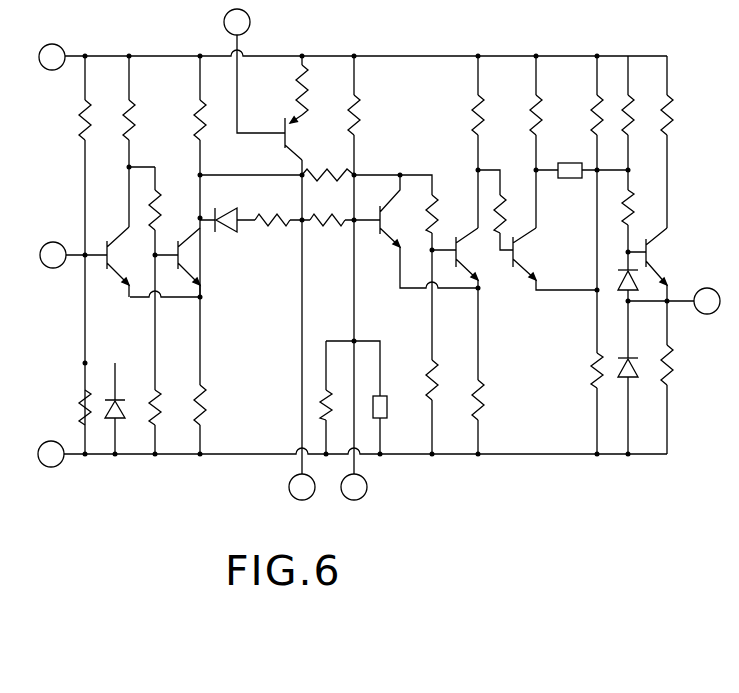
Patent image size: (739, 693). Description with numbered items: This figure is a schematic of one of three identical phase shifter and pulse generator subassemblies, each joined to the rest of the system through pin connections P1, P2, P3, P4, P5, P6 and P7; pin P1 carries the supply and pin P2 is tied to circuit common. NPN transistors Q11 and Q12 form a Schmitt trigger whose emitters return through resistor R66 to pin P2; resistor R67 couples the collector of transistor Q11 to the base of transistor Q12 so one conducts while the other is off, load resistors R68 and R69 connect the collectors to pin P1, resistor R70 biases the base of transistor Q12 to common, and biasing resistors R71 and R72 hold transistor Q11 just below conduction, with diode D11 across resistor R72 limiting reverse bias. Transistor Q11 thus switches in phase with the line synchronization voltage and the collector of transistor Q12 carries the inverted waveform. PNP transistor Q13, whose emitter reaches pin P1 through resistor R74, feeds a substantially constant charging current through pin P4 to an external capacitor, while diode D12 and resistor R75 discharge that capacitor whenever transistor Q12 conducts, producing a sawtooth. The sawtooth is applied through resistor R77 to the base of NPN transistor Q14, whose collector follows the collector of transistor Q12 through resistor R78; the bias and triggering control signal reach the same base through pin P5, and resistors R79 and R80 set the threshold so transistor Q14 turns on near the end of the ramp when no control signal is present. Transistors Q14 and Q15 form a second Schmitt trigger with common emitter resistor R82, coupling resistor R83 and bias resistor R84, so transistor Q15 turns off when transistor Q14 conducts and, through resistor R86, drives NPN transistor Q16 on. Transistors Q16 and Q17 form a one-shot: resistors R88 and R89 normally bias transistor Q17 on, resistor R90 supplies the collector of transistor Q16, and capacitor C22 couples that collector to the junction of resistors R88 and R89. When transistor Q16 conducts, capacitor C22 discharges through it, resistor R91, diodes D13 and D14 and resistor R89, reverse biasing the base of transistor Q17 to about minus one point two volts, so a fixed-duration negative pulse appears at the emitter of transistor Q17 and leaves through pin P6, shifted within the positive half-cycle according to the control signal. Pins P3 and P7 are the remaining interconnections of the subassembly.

The pin connection P1 is at (52, 57).
The pin connection P2 is at (51, 454).
The pin connection P3 is at (237, 22).
The pin connection P4 is at (302, 487).
The pin connection P5 is at (354, 487).
The pin connection P6 is at (707, 301).
The pin connection P7 is at (53, 255).
The resistor R66 is at (205, 410).
The resistor R67 is at (155, 215).
The load resistor R68 is at (125, 121).
The resistor R69 is at (215, 127).
The resistor R70 is at (157, 400).
The biasing resistor R71 is at (80, 131).
The biasing resistor R72 is at (77, 412).
The resistor R74 is at (305, 91).
The resistor R75 is at (283, 212).
The resistor R77 is at (348, 212).
The resistor R78 is at (347, 166).
The biasing resistor R79 is at (358, 112).
The biasing resistor R80 is at (323, 388).
The common emitter resistor R82 is at (482, 398).
The resistor R83 is at (433, 220).
The resistor R84 is at (434, 383).
The resistor R86 is at (500, 215).
The resistor R88 is at (630, 101).
The resistor R89 is at (630, 216).
The resistor R90 is at (540, 105).
The resistor R91 is at (595, 344).
The capacitor C22 is at (565, 180).
The diode D11 is at (118, 400).
The diode D12 is at (233, 228).
The diode D13 is at (625, 283).
The diode D14 is at (634, 370).
The NPN transistor Q11 is at (107, 253).
The NPN transistor Q12 is at (190, 256).
The PNP transistor Q13 is at (290, 133).
The NPN transistor Q14 is at (396, 211).
The NPN transistor Q15 is at (458, 255).
The NPN transistor Q16 is at (515, 256).
The NPN transistor Q17 is at (655, 257).